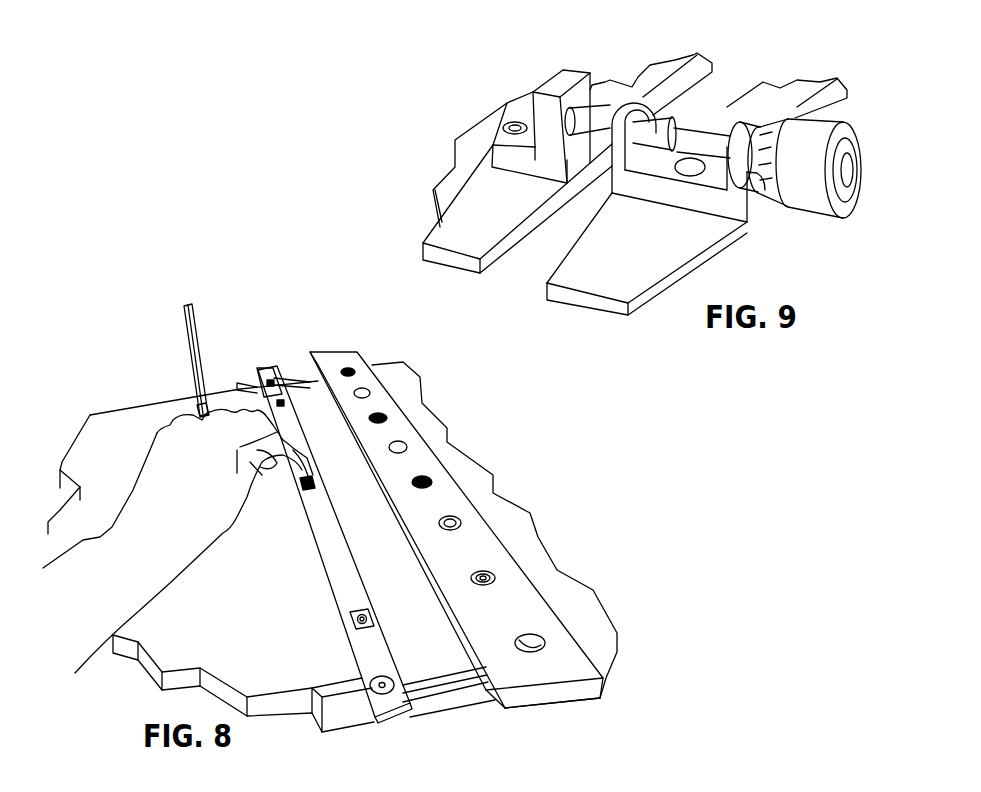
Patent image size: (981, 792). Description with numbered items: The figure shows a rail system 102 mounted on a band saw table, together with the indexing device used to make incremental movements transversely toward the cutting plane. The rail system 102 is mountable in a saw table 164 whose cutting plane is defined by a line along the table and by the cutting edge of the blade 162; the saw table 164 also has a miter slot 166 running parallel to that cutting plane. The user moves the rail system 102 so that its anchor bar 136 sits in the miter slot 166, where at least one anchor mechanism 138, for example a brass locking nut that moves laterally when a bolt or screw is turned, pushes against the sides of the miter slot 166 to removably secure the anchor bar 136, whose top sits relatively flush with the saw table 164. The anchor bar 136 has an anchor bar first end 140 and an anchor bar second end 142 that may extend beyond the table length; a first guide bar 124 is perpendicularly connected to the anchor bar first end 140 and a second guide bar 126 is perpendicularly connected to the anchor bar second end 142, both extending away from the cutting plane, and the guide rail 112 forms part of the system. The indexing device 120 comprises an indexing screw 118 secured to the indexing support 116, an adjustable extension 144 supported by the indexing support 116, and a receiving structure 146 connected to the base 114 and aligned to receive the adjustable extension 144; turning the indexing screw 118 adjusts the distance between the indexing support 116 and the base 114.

In FIG. 8, the rail system 102 is at (292, 325).
In FIG. 8, the guide rail 112 is at (520, 583).
In FIG. 9, the base 114 is at (477, 228).
In FIG. 9, the indexing support 116 is at (668, 243).
In FIG. 9, the indexing screw 118 is at (840, 122).
In FIG. 9, the indexing device 120 is at (745, 48).
In FIG. 8, the first guide bar 124 is at (447, 690).
In FIG. 8, the second guide bar 126 is at (300, 377).
In FIG. 8, the anchor bar 136 is at (323, 550).
In FIG. 8, the anchor mechanism 138 is at (297, 493).
In FIG. 8, the anchor bar first end 140 is at (397, 696).
In FIG. 8, the anchor bar second end 142 is at (273, 378).
In FIG. 9, the adjustable extension 144 is at (676, 126).
In FIG. 9, the receiving structure 146 is at (587, 85).
In FIG. 8, the blade 162 is at (192, 377).
In FIG. 8, the saw table 164 is at (217, 400).
In FIG. 8, the miter slot 166 is at (322, 645).